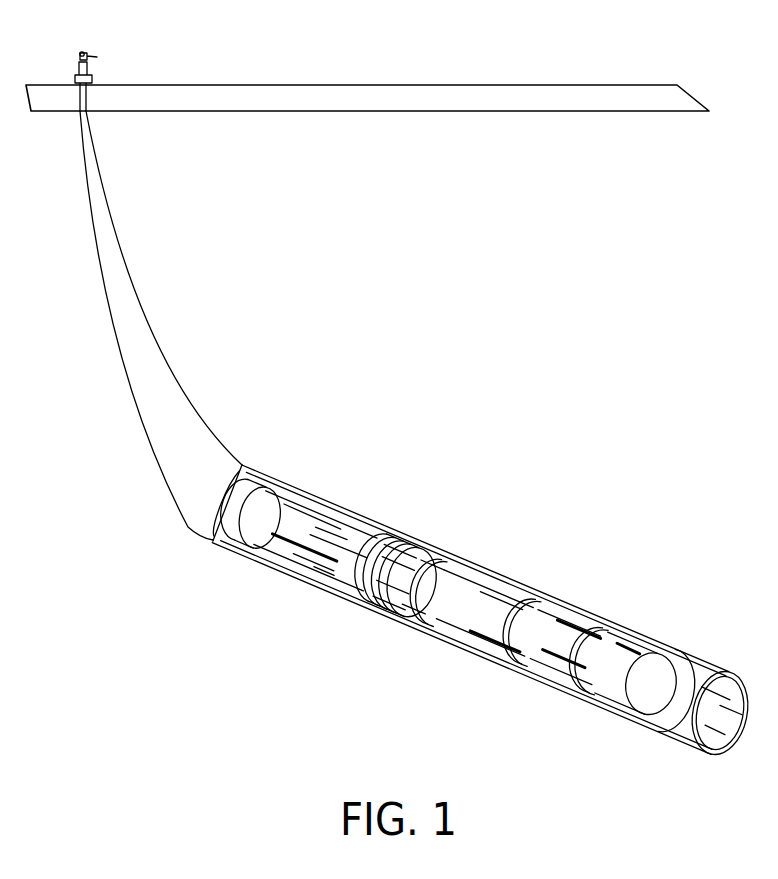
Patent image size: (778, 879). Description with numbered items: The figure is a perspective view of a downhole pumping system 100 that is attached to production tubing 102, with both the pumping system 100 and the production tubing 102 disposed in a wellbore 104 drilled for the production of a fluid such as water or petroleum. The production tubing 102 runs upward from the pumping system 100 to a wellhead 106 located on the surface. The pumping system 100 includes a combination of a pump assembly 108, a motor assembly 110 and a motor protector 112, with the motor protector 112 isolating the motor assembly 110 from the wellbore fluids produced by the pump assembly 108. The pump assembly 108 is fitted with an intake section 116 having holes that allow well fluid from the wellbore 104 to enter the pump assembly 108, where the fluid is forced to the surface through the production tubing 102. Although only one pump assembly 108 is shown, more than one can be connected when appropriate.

The pumping system 100 is at (537, 593).
The production tubing 102 is at (228, 490).
The wellbore 104 is at (202, 426).
The wellhead 106 is at (93, 54).
The pump assembly 108 is at (352, 533).
The motor assembly 110 is at (600, 633).
The motor protector 112 is at (487, 583).
The intake section 116 is at (422, 542).